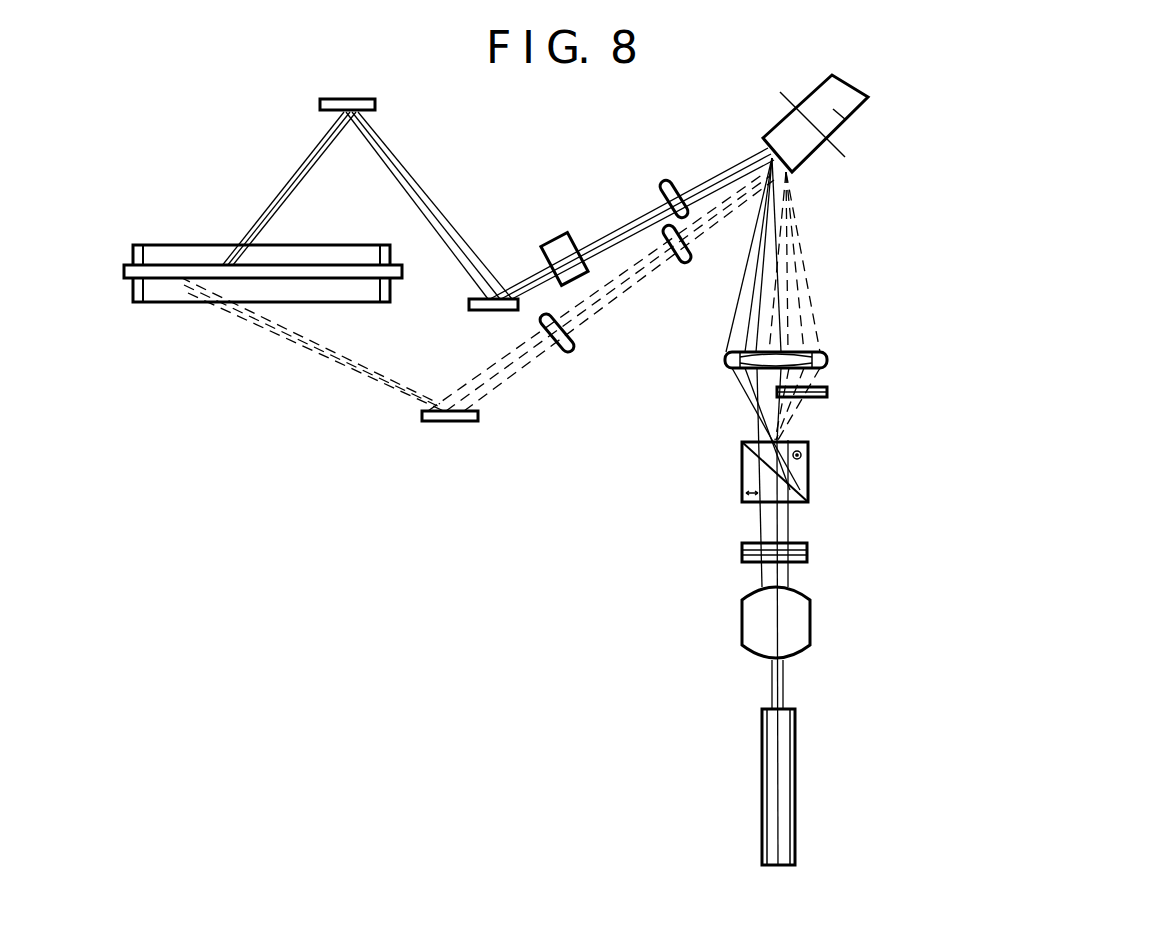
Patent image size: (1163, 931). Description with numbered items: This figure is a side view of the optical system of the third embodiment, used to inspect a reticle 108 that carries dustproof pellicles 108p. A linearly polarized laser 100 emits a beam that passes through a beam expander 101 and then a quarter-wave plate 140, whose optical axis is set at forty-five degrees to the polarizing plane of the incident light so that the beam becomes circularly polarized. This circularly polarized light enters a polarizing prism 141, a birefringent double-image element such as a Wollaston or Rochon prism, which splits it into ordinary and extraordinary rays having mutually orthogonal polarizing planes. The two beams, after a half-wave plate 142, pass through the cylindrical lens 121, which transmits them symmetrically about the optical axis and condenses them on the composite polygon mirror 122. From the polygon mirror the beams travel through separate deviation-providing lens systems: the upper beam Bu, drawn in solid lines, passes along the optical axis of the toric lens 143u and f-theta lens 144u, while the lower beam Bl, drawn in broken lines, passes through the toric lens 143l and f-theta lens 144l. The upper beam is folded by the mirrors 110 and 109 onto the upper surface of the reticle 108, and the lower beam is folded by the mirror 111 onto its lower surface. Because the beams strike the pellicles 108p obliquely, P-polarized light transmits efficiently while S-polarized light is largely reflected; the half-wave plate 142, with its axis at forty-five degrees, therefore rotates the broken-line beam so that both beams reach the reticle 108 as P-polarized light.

The laser 100 is at (792, 738).
The beam expander 101 is at (800, 628).
The reticle 108 is at (130, 272).
The pellicles 108p is at (176, 246).
The mirror 109 is at (470, 305).
The mirror 110 is at (376, 104).
The mirror 111 is at (476, 422).
The cylindrical lens 121 is at (828, 356).
The composite polygon mirror 122 is at (870, 97).
The λ/4 plate 140 is at (807, 545).
The polarizing prism 141 is at (803, 483).
The λ/2 plate 142 is at (830, 387).
The toric lens 143u is at (667, 180).
The toric lens 143l is at (686, 264).
The f-θ lens 144u is at (561, 237).
The f-θ lens 144l is at (572, 353).
The upper light beam Bu is at (497, 205).
The lower light beam Bl is at (477, 292).